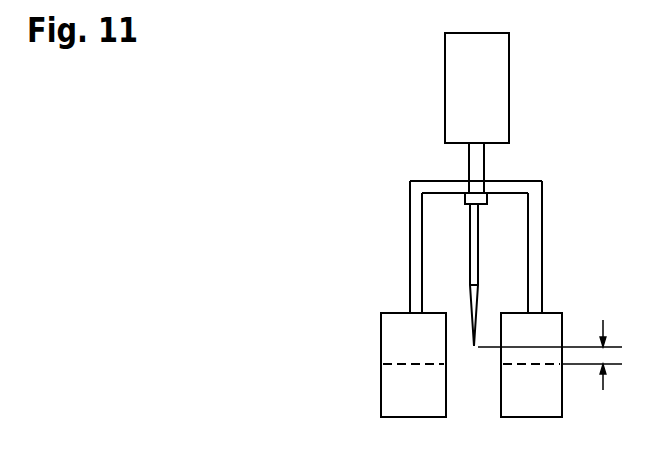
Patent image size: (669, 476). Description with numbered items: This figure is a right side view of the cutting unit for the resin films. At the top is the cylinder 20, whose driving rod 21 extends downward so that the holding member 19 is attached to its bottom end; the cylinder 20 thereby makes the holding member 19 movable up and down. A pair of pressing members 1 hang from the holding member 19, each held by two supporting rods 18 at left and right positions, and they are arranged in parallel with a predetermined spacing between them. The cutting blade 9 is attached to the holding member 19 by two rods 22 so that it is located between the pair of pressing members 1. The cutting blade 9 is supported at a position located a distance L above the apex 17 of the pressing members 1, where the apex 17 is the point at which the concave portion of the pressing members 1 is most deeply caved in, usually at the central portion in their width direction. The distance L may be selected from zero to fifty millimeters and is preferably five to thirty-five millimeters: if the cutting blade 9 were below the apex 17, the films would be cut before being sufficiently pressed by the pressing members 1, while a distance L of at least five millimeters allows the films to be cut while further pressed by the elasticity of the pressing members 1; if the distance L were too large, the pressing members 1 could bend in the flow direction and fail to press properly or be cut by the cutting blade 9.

The pressing member 1 is at (395, 341).
The cutting blade 9 is at (476, 300).
The apex 17 is at (411, 367).
The supporting rod 18 is at (533, 212).
The holding member 19 is at (440, 187).
The cylinder 20 is at (499, 57).
The driving rod 21 is at (478, 157).
The rod 22 is at (470, 225).
The distance L is at (552, 353).